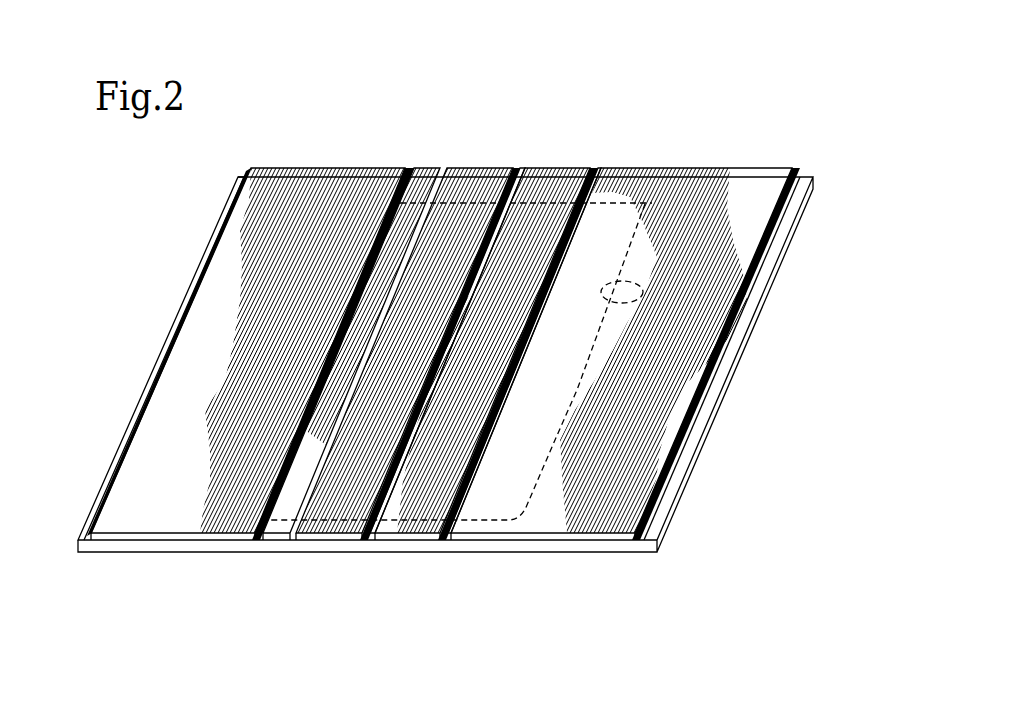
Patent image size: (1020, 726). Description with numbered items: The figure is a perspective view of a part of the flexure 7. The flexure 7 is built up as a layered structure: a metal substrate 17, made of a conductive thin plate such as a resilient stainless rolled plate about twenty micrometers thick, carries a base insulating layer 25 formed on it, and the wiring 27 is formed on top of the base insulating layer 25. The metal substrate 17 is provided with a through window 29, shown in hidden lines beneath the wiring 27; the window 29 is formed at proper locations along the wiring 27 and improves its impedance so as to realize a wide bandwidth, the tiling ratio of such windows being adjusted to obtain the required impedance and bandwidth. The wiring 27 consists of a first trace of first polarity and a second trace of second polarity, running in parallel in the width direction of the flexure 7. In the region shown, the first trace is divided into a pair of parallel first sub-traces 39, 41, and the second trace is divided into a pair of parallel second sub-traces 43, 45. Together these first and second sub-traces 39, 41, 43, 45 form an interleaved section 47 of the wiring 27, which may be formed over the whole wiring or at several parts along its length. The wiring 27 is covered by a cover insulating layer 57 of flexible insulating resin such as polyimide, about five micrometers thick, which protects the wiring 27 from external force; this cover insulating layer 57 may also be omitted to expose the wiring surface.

The flexure 7 is at (434, 334).
The metal substrate 17 is at (138, 555).
The base insulating layer 25 is at (102, 553).
The wiring 27 is at (519, 160).
The window 29 is at (627, 300).
The first sub-trace 39 is at (322, 545).
The first sub-trace 41 is at (453, 542).
The second sub-trace 43 is at (262, 545).
The second sub-trace 45 is at (393, 545).
The interleaved section 47 is at (487, 503).
The cover insulating layer 57 is at (706, 168).